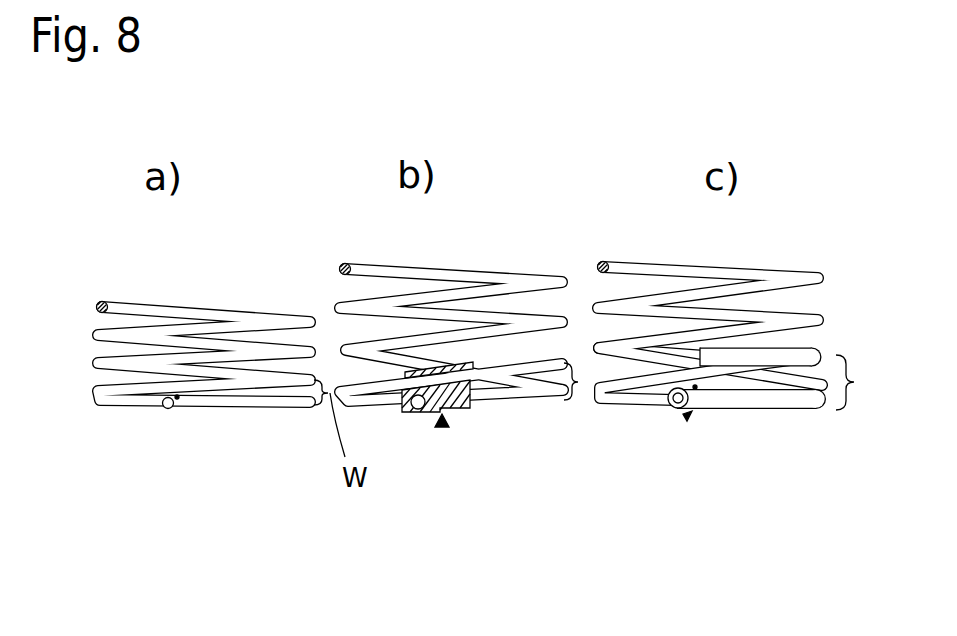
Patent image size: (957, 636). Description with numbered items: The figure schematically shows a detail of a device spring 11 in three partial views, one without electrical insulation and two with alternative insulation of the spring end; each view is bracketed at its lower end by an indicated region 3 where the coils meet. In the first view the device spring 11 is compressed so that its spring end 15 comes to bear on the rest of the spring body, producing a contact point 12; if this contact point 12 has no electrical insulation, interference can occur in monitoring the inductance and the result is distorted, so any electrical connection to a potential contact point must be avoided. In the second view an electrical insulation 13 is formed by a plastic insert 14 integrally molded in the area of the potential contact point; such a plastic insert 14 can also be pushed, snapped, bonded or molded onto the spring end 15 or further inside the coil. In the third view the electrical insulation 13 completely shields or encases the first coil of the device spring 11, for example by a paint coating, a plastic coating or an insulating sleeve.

The device spring 11 is at (90, 350).
The contact point 12 is at (177, 397).
The electrical insulation 13 is at (442, 427).
The plastic insert 14 is at (404, 412).
The spring end 15 is at (163, 409).
The end turn region 3 is at (600, 382).